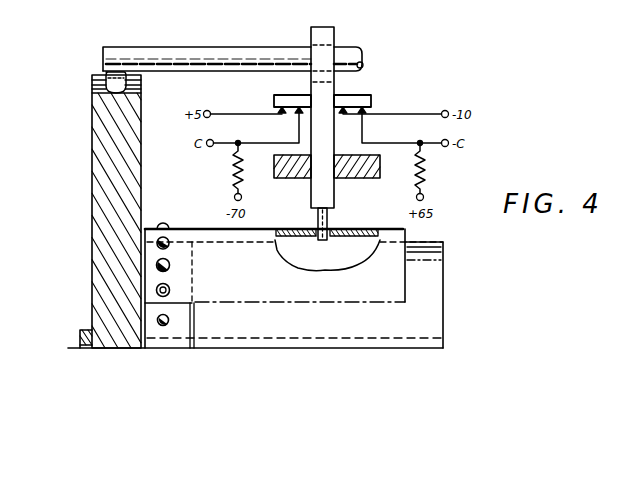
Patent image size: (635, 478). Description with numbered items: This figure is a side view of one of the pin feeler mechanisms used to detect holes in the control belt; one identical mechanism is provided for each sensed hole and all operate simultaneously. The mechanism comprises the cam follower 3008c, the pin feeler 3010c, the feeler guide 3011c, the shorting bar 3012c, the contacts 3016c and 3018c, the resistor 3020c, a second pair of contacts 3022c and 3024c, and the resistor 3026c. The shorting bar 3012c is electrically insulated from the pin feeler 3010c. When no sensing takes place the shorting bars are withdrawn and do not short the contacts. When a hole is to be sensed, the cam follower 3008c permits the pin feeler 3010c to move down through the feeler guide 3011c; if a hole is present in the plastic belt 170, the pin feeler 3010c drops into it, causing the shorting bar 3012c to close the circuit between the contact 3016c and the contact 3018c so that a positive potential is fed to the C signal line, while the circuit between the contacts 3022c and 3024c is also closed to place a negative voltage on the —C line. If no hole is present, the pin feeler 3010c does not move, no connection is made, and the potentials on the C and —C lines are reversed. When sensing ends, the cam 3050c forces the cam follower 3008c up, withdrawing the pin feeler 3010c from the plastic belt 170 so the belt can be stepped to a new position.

The cam follower 3008c is at (176, 47).
The cam 3050c is at (92, 104).
The shorting bar 3012c is at (274, 101).
The contact 3016c is at (238, 115).
The contact 3018c is at (290, 142).
The contact 3022c is at (405, 115).
The contact 3024c is at (407, 142).
The resistor 3020c is at (232, 169).
The resistor 3026c is at (426, 169).
The feeler guide 3011c is at (304, 179).
The pin feeler 3010c is at (328, 219).
The plastic belt 170 is at (261, 229).